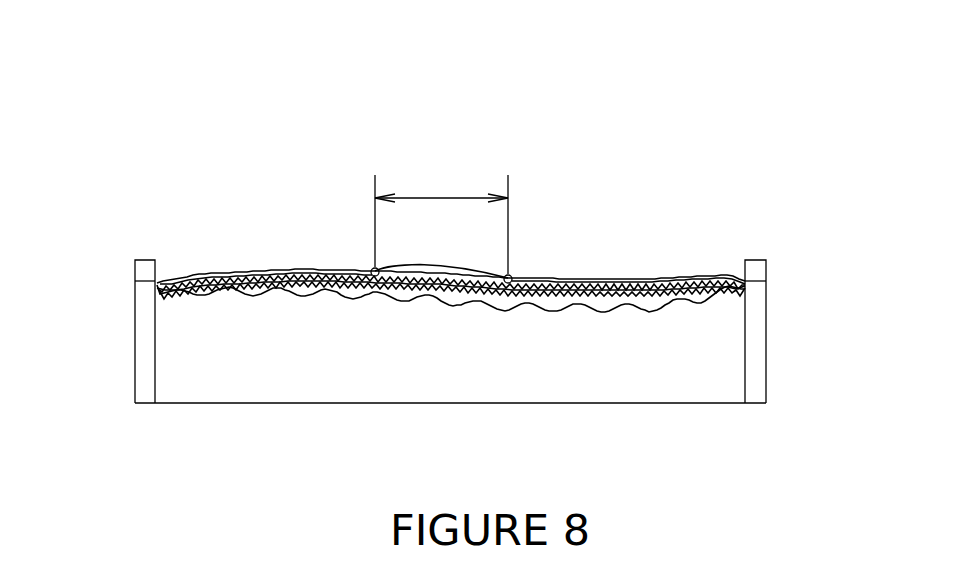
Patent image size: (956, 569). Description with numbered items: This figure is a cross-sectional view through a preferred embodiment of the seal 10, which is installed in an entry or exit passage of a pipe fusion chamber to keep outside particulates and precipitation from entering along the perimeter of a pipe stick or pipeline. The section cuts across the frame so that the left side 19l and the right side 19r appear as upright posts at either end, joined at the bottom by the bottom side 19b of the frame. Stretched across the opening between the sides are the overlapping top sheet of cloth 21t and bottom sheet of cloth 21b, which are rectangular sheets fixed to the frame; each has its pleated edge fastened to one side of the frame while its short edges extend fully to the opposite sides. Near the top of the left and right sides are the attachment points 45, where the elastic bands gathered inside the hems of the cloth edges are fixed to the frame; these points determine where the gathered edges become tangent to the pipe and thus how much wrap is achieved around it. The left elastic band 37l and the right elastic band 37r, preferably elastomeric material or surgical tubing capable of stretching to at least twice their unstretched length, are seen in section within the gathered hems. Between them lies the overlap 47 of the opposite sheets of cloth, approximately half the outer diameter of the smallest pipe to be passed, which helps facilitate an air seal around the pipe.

The seal 10 is at (247, 148).
The left side of frame 19l is at (145, 343).
The right side of frame 19r is at (757, 347).
The bottom side of frame 19b is at (455, 388).
The attachment points 45 is at (144, 279).
The top sheet of cloth 21t is at (260, 280).
The bottom sheet of cloth 21b is at (237, 272).
The left elastic band 37l is at (375, 266).
The right elastic band 37r is at (513, 279).
The overlap 47 is at (433, 198).